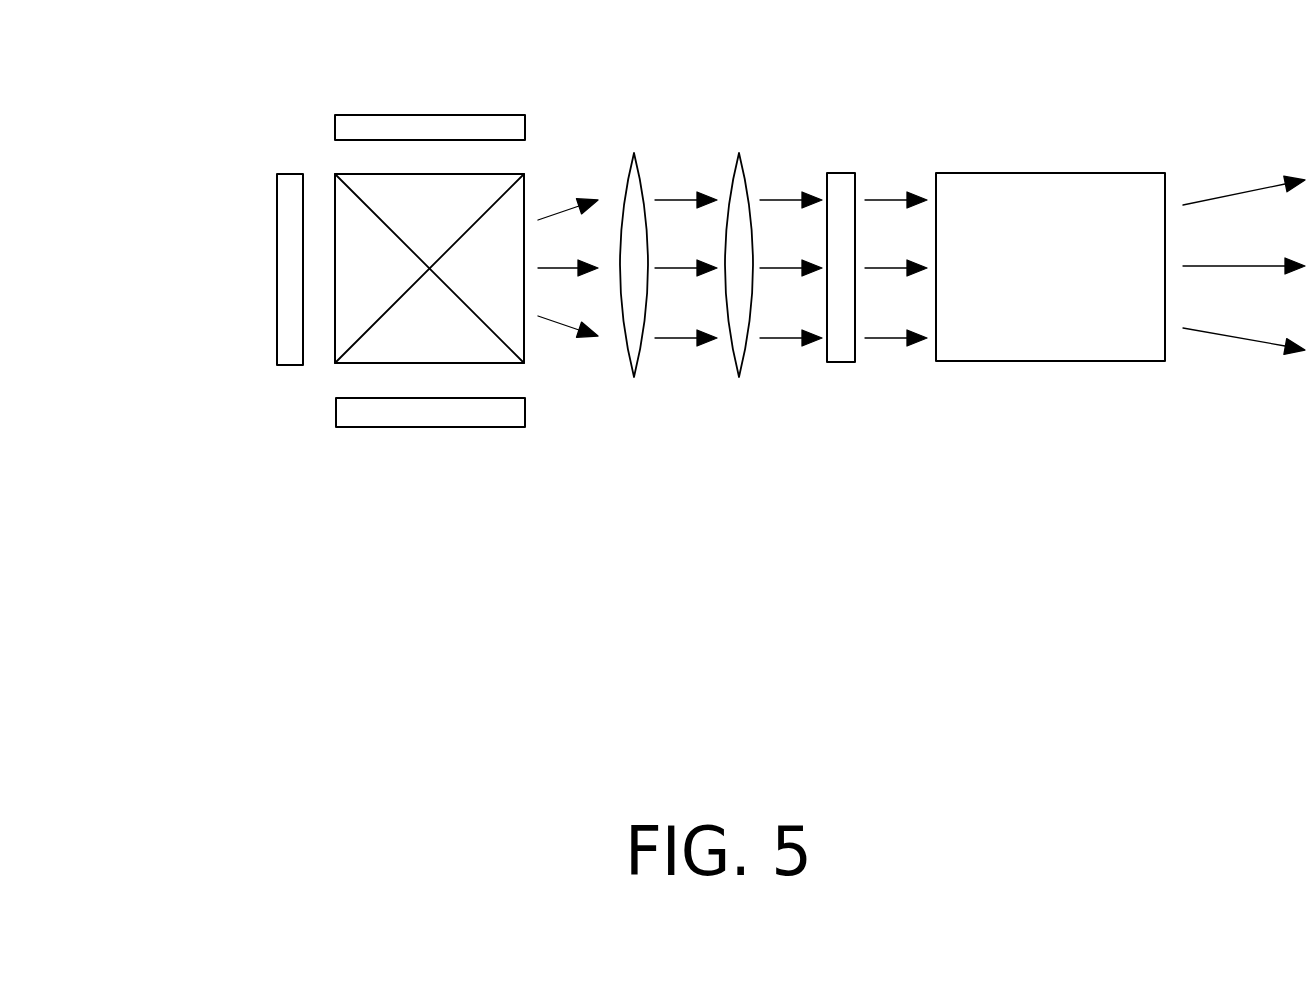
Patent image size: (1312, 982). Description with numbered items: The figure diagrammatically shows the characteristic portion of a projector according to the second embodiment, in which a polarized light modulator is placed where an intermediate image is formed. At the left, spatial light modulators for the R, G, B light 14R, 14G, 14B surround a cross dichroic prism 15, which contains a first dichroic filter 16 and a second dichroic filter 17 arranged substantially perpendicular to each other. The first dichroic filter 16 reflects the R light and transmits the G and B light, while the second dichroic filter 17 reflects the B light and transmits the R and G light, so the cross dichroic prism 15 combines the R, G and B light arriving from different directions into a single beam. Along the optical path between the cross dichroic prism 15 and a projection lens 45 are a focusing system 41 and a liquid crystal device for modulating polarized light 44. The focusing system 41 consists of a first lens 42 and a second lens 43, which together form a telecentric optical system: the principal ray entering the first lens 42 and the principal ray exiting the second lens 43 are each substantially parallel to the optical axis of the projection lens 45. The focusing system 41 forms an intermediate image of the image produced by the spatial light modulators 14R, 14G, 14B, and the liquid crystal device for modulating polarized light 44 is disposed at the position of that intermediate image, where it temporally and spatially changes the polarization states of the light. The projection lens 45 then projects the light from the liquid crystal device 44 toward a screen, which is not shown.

The spatial light modulator for R light 14R is at (432, 115).
The spatial light modulator for G light 14G is at (277, 268).
The spatial light modulator for B light 14B is at (433, 427).
The cross dichroic prism 15 is at (355, 187).
The first dichroic filter 16 is at (503, 343).
The second dichroic filter 17 is at (502, 192).
The focusing system 41 is at (750, 140).
The first lens 42 is at (635, 377).
The second lens 43 is at (738, 377).
The liquid crystal device for modulating polarized light 44 is at (843, 173).
The projection lens 45 is at (1052, 173).